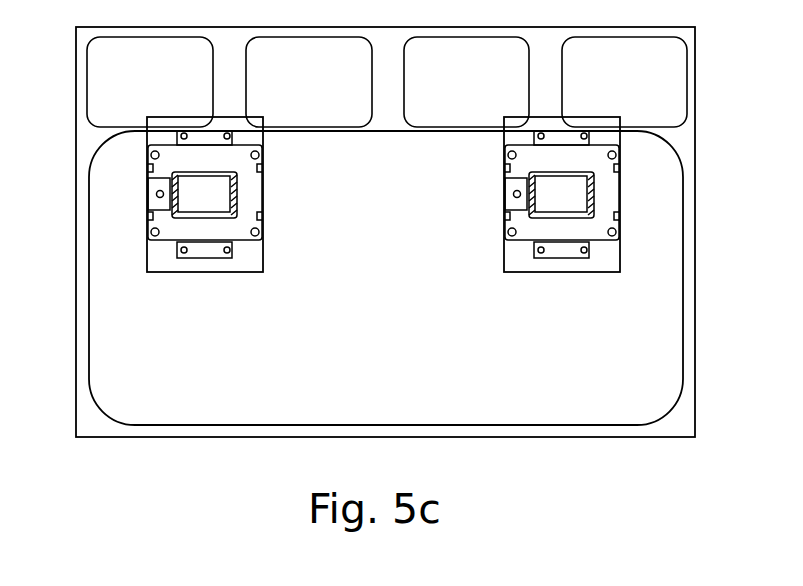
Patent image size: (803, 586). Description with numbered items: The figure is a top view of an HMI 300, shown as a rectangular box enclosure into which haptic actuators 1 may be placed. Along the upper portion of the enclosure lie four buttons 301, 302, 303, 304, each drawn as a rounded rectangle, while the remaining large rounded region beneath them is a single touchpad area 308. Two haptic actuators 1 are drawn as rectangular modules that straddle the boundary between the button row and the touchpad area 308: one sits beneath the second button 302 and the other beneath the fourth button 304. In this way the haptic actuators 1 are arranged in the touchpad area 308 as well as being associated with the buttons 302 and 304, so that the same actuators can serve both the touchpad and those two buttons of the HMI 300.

The HMI 300 is at (107, 453).
The button 301 is at (128, 94).
The button 302 is at (287, 94).
The button 303 is at (444, 94).
The button 304 is at (602, 94).
The touchpad area 308 is at (364, 290).
The haptic actuator 1 is at (148, 167).